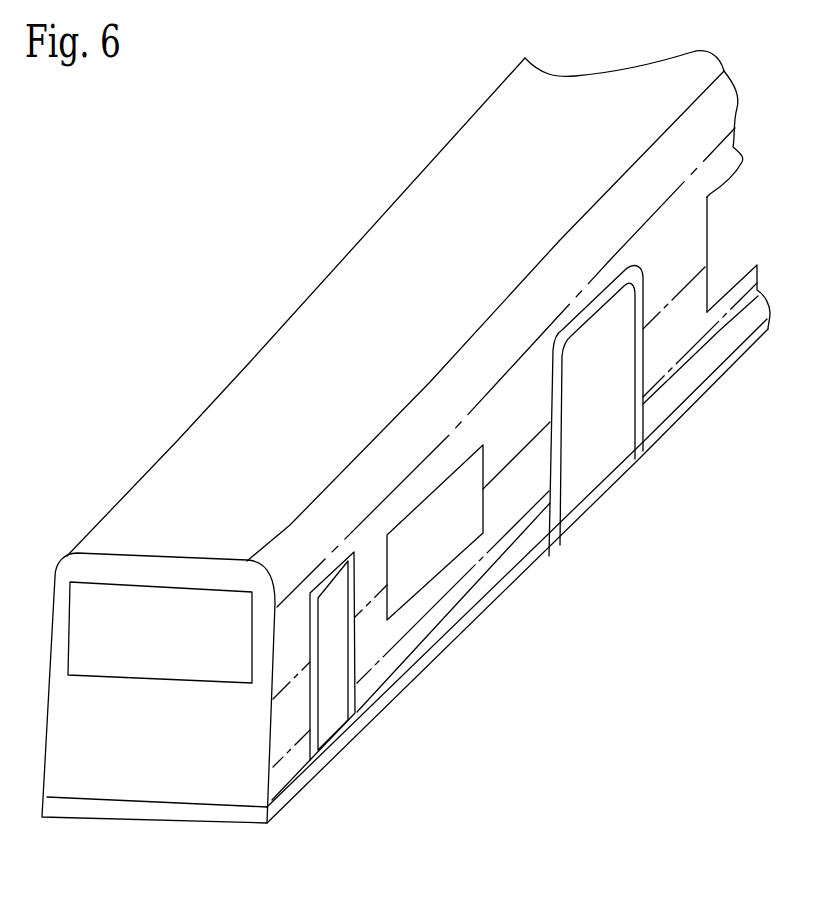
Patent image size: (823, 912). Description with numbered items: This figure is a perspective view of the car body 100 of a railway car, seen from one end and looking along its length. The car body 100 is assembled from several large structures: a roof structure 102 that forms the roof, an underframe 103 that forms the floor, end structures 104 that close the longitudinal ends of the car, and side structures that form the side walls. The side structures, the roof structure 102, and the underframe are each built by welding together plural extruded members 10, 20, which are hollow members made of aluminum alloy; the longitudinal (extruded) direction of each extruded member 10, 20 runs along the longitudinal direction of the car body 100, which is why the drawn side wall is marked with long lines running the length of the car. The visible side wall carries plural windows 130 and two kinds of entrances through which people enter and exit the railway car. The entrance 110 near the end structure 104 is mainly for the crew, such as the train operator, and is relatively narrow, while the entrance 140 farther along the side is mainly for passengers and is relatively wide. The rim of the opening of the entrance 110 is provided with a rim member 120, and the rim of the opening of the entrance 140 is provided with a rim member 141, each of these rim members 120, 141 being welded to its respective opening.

The car body 100 is at (406, 472).
The roof structure 102 is at (222, 421).
The underframe 103 is at (217, 815).
The end structure 104 is at (95, 793).
The extruded member 10 is at (500, 414).
The extruded member 20 is at (527, 505).
The entrance 110 is at (333, 723).
The rim member 120 is at (360, 707).
The window 130 is at (415, 524).
The entrance 140 is at (585, 477).
The rim member 141 is at (627, 417).